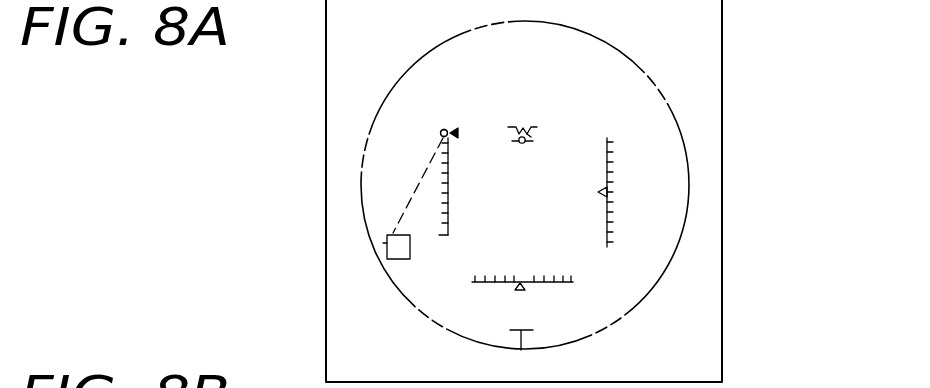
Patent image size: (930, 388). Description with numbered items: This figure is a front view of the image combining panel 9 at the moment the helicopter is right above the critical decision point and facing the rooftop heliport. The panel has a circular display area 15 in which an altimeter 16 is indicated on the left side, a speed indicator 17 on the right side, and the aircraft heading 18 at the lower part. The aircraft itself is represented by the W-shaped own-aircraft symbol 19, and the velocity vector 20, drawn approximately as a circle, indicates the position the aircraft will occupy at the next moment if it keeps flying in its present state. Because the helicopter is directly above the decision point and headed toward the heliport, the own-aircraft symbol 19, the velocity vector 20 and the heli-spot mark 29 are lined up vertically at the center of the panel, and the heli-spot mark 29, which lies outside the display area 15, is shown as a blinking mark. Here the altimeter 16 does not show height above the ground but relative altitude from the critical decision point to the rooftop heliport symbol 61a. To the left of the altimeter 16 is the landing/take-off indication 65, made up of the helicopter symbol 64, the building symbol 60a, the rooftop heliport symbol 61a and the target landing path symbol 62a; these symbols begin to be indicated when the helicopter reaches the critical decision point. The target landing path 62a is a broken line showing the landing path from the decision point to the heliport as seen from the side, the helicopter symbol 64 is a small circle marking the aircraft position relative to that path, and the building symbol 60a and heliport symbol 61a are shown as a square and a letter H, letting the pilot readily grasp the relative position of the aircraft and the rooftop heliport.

The image combining panel 9 is at (326, 97).
The circular display area 15 is at (390, 284).
The altimeter 16 is at (450, 178).
The speed indicator 17 is at (608, 167).
The aircraft heading 18 is at (563, 284).
The own-aircraft symbol 19 is at (534, 135).
The velocity vector 20 is at (538, 136).
The heli-spot mark 29 is at (522, 340).
The symbol of the building 60a is at (383, 243).
The symbol of the rooftop heliport 61a is at (393, 234).
The symbol of the target landing path 62a is at (417, 183).
The symbol of the helicopter 64 is at (441, 133).
The landing/take-off indication 65 is at (200, 88).